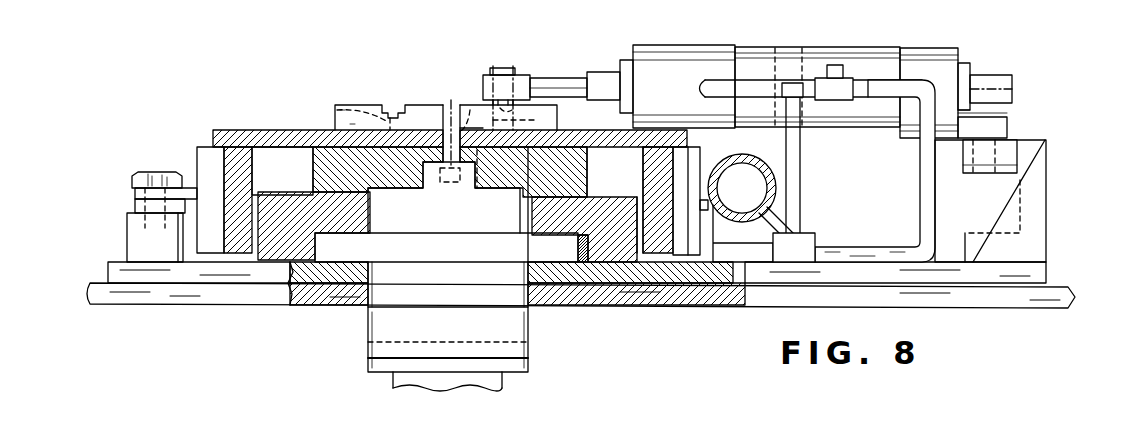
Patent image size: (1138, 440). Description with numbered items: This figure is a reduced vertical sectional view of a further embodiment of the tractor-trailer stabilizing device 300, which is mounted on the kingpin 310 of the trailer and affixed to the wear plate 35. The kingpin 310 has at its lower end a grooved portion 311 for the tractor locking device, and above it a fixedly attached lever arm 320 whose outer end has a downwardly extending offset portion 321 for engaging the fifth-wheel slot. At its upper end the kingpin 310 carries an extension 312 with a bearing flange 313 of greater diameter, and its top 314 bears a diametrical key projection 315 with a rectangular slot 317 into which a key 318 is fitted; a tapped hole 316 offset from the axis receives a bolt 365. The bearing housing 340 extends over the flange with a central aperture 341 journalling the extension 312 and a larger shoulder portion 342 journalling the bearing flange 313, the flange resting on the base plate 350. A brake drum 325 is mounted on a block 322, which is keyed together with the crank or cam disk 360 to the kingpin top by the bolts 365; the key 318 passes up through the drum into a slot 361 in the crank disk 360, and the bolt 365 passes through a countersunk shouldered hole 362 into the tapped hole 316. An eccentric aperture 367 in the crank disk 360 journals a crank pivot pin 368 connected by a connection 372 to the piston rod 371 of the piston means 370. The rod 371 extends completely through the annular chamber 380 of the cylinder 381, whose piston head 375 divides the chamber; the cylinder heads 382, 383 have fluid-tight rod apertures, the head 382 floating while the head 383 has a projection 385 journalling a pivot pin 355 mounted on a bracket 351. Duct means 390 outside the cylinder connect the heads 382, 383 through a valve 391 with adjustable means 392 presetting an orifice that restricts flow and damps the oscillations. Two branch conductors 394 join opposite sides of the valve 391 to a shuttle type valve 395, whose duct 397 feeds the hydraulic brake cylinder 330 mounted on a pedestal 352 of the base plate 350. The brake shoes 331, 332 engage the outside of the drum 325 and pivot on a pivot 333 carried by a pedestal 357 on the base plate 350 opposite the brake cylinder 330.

The wear plate 35 is at (980, 300).
The stabilizing device 300 is at (753, 43).
The kingpin 310 is at (530, 338).
The grooved portion 311 is at (505, 380).
The extension 312 is at (465, 291).
The bearing flange 313 is at (465, 258).
The top 314 is at (525, 190).
The key projection 315 is at (480, 168).
The tapped hole 316 is at (385, 205).
The rectangular slot 317 is at (460, 190).
The key 318 is at (450, 128).
The lever arm 320 is at (368, 318).
The offset portion 321 is at (368, 343).
The block 322 is at (330, 172).
The brake drum 325 is at (246, 126).
The hydraulic brake cylinder 330 is at (770, 165).
The brake shoe 331 is at (137, 193).
The brake shoe 332 is at (138, 207).
The pivot 333 is at (157, 172).
The bearing housing 340 is at (600, 196).
The central aperture 341 is at (533, 203).
The shoulder portion 342 is at (581, 245).
The base plate 350 is at (1035, 278).
The bracket 351 is at (1038, 205).
The pedestal 352 is at (738, 240).
The pivot pin 355 is at (990, 178).
The pedestal 357 is at (135, 233).
The crank disk 360 is at (372, 105).
The slot 361 is at (470, 110).
The countersunk shouldered hole 362 is at (380, 120).
The bolt 365 is at (393, 118).
The aperture 367 is at (558, 118).
The crank pivot pin 368 is at (508, 68).
The piston means 370 is at (571, 63).
The piston rod 371 is at (545, 80).
The connection 372 is at (488, 73).
The piston head 375 is at (785, 65).
The annular chamber 380 is at (868, 62).
The cylinder 381 is at (815, 55).
The cylinder head 382 is at (678, 53).
The cylinder head 383 is at (950, 52).
The projection 385 is at (1000, 130).
The duct means 390 is at (891, 76).
The valve 391 is at (838, 100).
The adjustable means 392 is at (836, 65).
The branch conductor 394 is at (800, 182).
The shuttle type valve 395 is at (805, 243).
The duct 397 is at (778, 222).